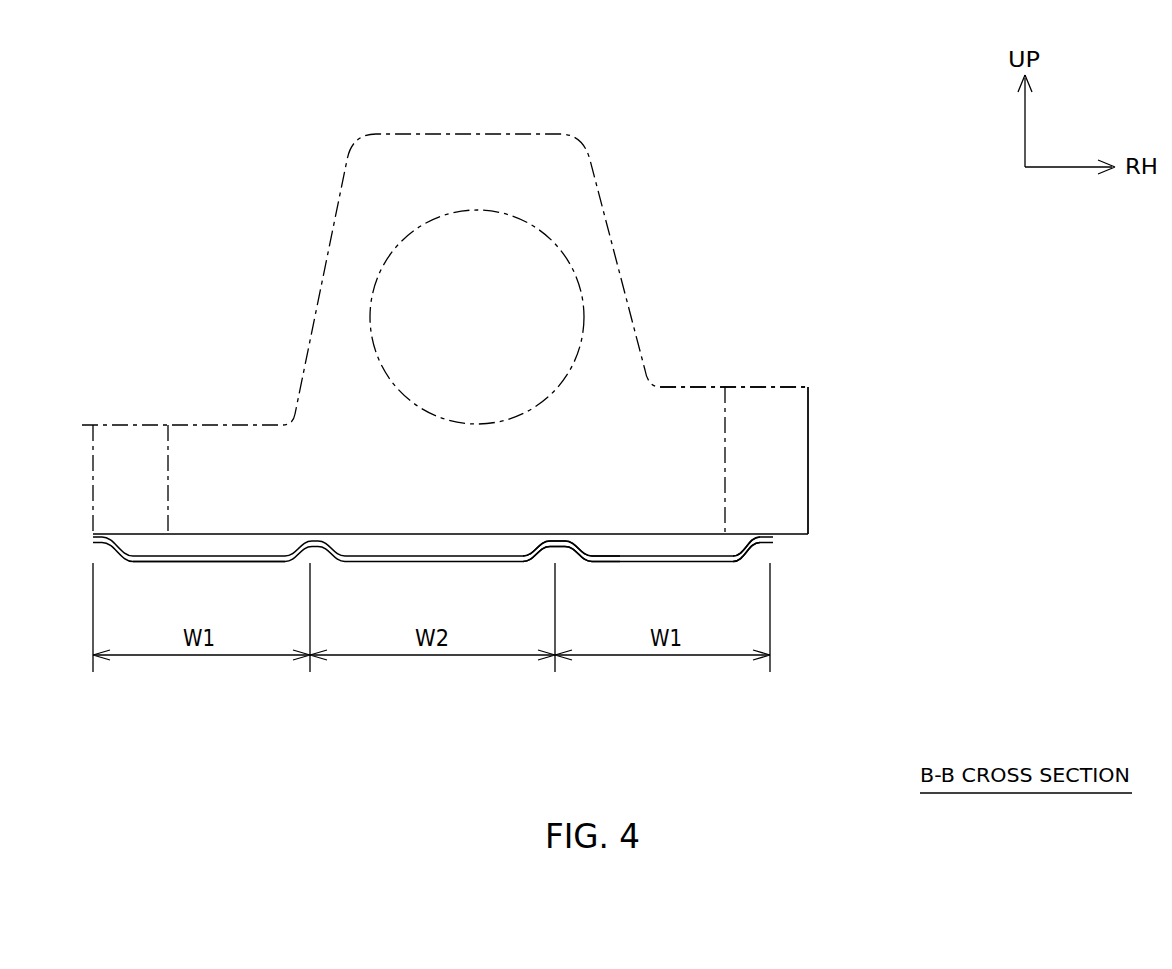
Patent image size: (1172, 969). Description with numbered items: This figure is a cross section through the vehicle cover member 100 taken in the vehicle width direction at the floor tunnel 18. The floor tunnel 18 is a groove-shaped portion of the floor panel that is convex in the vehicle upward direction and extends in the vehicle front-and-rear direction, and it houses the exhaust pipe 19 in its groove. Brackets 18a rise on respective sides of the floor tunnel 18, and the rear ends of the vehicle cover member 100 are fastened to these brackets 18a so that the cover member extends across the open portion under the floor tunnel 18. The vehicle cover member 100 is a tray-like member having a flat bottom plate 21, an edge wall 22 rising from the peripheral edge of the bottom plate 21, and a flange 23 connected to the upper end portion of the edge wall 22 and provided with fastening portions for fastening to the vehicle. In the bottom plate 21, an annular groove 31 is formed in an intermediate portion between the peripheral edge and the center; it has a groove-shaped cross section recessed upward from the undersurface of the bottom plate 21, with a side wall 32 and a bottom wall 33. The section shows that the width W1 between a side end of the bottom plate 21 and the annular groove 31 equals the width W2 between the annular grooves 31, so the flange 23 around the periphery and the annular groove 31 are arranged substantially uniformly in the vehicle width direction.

The floor tunnel 18 is at (630, 285).
The bracket 18a is at (808, 460).
The exhaust pipe 19 is at (550, 240).
The bottom plate 21 is at (702, 563).
The edge wall 22 is at (752, 552).
The flange 23 is at (765, 542).
The annular groove 31 is at (557, 549).
The side wall 32 is at (572, 553).
The bottom wall 33 is at (565, 538).
The vehicle cover member 100 is at (156, 563).